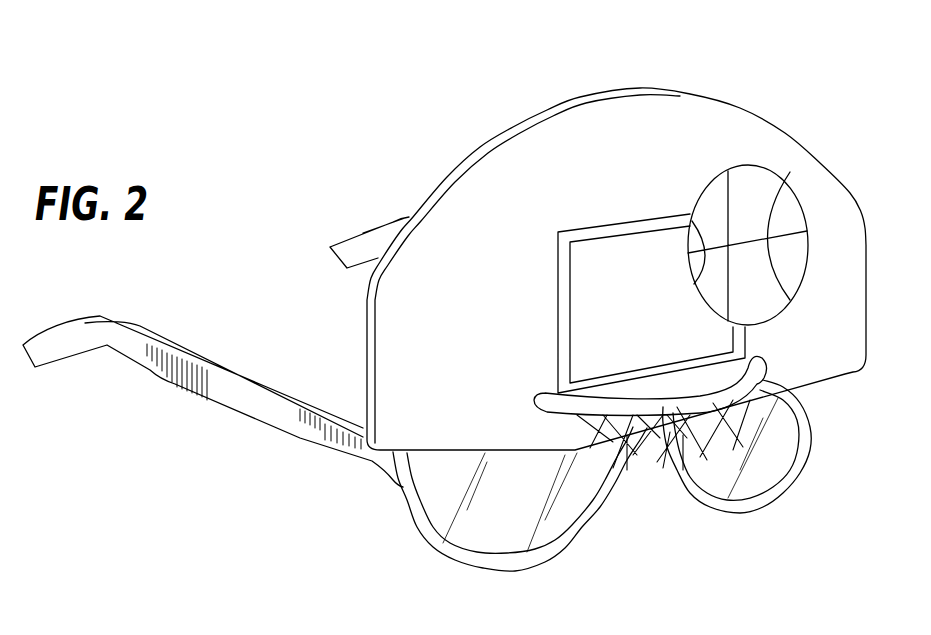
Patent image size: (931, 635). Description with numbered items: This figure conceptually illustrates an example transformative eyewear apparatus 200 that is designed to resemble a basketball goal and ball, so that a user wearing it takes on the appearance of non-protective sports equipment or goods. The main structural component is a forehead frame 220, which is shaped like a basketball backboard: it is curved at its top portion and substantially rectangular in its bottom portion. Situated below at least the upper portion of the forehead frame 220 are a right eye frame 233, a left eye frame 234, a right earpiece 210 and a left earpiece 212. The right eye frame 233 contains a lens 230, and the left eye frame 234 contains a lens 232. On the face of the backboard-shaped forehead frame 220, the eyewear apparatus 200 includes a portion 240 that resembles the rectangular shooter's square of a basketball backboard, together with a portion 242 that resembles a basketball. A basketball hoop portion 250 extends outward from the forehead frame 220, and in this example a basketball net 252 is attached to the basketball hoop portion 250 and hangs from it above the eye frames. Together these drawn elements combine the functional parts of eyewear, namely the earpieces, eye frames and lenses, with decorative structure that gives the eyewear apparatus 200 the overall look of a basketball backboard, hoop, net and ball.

The eyewear apparatus 200 is at (386, 124).
The right earpiece 210 is at (207, 387).
The left earpiece 212 is at (360, 230).
The forehead frame 220 is at (715, 127).
The lens 230 is at (473, 526).
The lens 232 is at (720, 476).
The right eye frame 233 is at (438, 553).
The left eye frame 234 is at (767, 483).
The portion resembling a shooter's square 240 is at (633, 250).
The portion resembling a basketball 242 is at (770, 190).
The basketball hoop portion 250 is at (762, 378).
The basketball net 252 is at (647, 433).